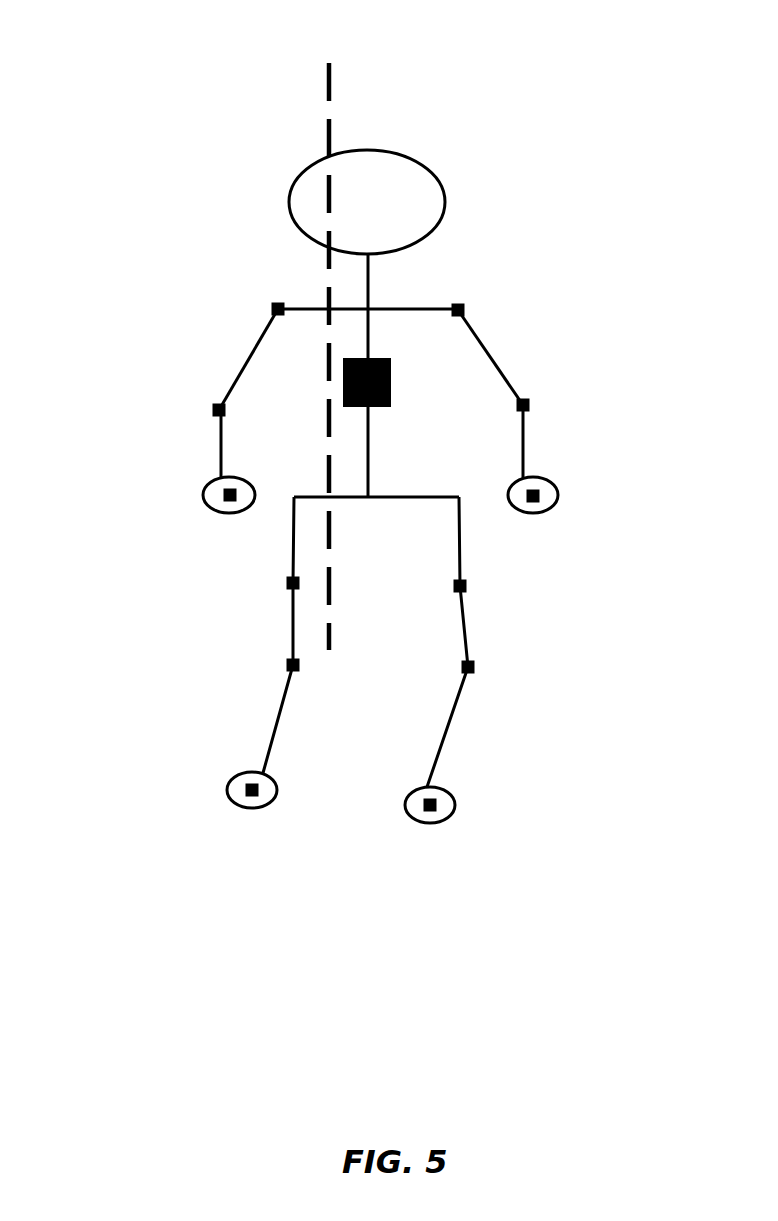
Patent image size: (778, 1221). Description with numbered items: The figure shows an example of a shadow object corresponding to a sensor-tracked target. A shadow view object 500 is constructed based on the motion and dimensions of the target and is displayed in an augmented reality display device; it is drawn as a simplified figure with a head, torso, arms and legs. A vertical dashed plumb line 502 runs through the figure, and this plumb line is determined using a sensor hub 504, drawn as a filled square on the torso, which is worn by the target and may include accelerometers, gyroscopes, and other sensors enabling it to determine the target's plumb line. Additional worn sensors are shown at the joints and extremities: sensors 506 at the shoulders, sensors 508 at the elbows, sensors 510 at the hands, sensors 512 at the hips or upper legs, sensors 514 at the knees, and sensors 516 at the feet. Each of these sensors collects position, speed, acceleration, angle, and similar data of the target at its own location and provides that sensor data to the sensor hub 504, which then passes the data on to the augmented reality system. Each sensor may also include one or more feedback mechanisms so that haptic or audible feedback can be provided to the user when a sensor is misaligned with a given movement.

The shadow view object 500 is at (183, 121).
The plumb line 502 is at (331, 78).
The sensor hub 504 is at (392, 385).
The sensor 506 is at (270, 305).
The sensor 508 is at (213, 408).
The sensor 510 is at (222, 485).
The sensor 512 is at (287, 587).
The sensor 514 is at (287, 668).
The sensor 516 is at (245, 790).